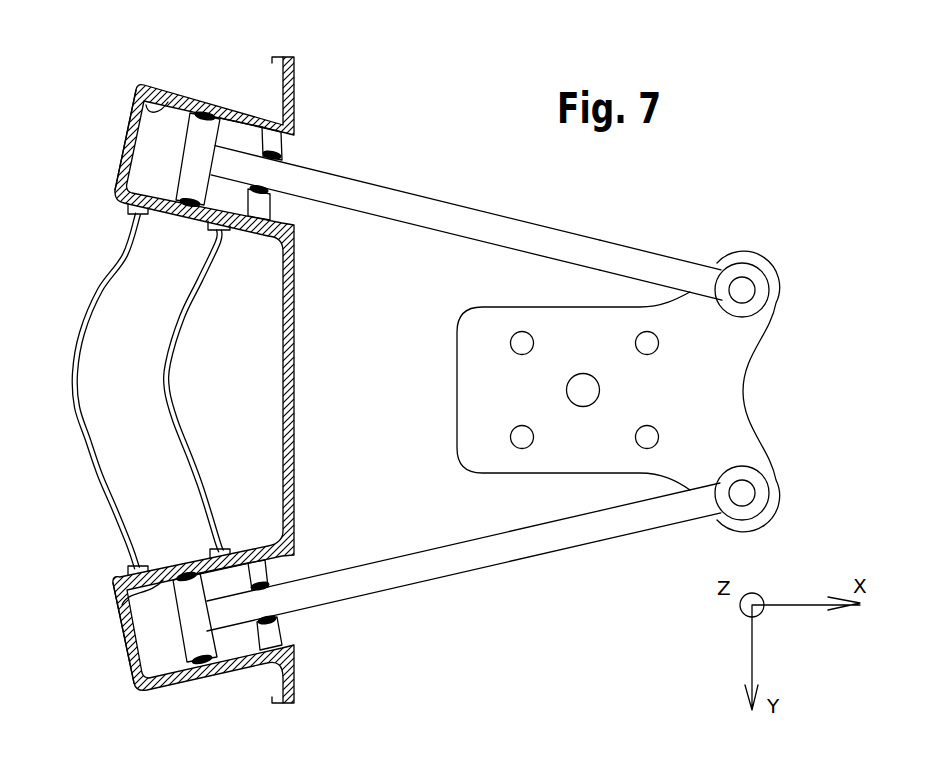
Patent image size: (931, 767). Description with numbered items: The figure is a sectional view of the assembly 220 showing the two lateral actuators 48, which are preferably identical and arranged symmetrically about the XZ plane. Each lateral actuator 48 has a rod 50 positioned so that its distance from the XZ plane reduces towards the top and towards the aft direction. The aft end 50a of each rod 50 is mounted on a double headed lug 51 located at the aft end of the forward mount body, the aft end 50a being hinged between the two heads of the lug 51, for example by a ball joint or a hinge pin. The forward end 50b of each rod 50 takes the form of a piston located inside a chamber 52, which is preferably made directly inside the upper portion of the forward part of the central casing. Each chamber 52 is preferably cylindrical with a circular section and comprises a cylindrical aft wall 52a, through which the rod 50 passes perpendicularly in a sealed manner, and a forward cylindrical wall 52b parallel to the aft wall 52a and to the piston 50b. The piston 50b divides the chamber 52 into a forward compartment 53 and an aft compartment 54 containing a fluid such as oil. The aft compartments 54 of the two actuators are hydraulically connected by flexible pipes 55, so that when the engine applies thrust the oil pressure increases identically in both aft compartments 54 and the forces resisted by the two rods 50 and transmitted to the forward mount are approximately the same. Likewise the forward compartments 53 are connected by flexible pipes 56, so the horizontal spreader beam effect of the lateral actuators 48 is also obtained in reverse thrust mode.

The steering wheel support assembly 220 is at (658, 170).
The lateral actuator 48 is at (93, 212).
The rod 50 is at (428, 197).
The aft end of the rod 50a is at (713, 273).
The forward end of the rod 50b is at (198, 127).
The double headed lug 51 is at (770, 278).
The chamber 52 is at (140, 86).
The cylindrical aft wall 52a is at (272, 142).
The forward cylindrical wall 52b is at (131, 121).
The forward compartment 53 is at (153, 172).
The aft compartment 54 is at (243, 137).
The flexible pipes 55 is at (177, 338).
The flexible pipes 56 is at (94, 312).